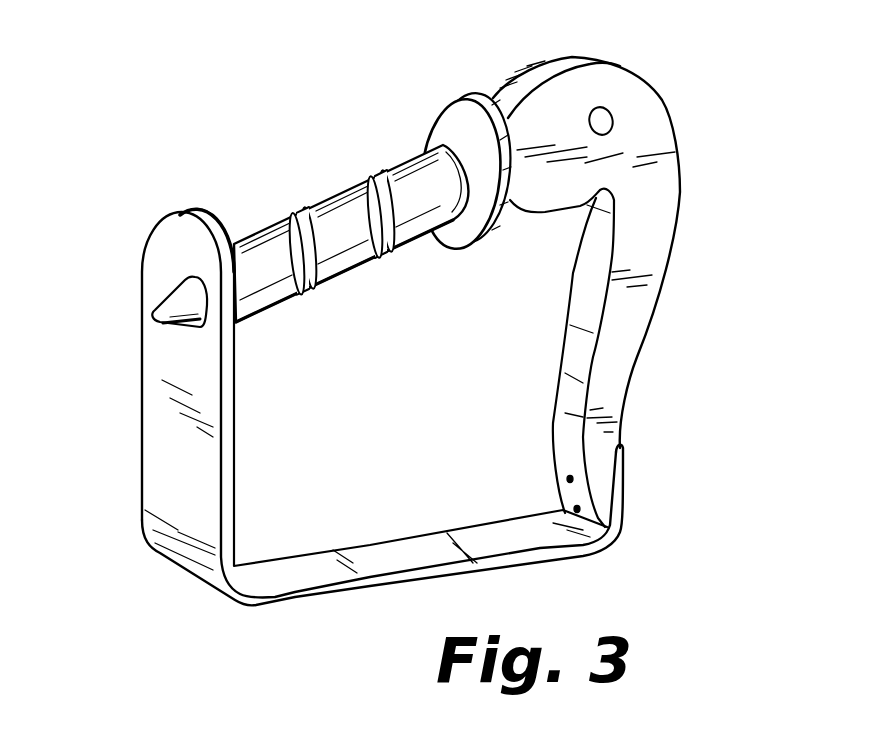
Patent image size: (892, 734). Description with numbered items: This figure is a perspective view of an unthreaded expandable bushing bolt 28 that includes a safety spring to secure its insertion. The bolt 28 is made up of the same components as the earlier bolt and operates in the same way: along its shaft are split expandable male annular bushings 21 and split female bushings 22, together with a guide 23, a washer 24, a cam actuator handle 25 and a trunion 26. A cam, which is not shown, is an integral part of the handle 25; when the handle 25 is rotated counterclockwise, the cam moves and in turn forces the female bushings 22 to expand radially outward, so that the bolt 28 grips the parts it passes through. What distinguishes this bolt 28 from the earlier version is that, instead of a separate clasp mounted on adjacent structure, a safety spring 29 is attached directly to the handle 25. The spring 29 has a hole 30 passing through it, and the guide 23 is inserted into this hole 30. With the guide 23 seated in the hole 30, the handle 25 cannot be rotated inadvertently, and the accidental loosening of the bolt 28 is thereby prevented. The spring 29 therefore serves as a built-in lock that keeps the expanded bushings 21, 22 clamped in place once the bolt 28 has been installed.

The unthreaded expandable bushing bolt 28 is at (262, 98).
The safety spring 29 is at (142, 524).
The guide 23 is at (160, 290).
The hole 30 is at (165, 327).
The split expandable male annular bushings 21 is at (295, 213).
The split female bushings 22 is at (388, 250).
The washer 24 is at (477, 240).
The cam actuator handle 25 is at (680, 200).
The trunion 26 is at (608, 126).